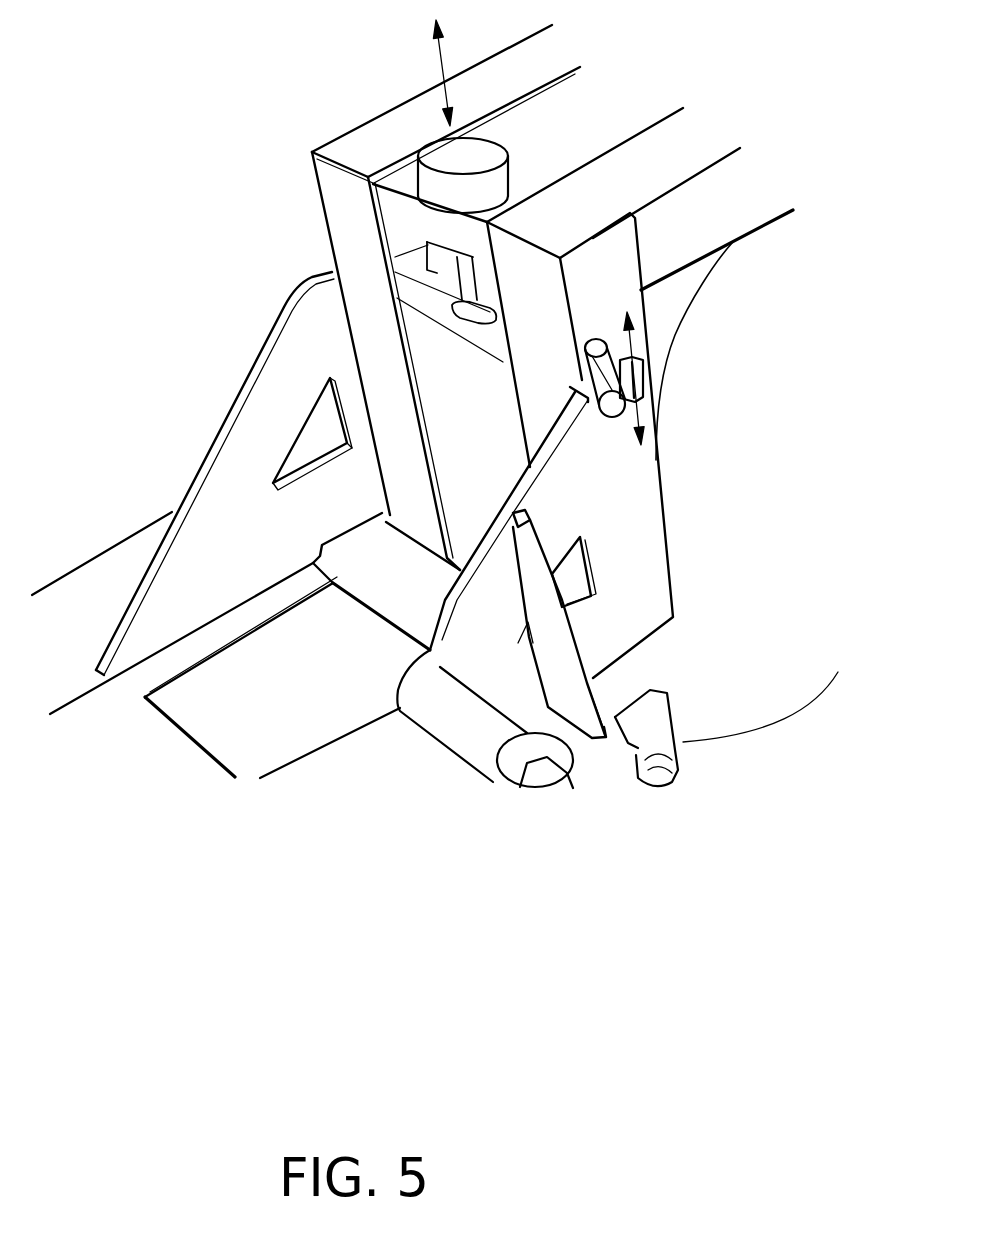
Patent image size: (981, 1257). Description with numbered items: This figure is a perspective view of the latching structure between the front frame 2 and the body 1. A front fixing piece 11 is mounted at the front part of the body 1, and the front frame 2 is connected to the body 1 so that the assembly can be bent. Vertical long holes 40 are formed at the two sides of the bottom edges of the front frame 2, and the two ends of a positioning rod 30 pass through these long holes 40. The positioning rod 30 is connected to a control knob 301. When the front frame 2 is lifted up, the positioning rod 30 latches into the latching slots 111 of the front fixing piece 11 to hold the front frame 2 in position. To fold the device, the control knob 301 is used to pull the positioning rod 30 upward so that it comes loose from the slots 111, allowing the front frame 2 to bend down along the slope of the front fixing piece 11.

The body 1 is at (120, 540).
The front frame 2 is at (337, 133).
The front fixing piece 11 is at (223, 427).
The positioning rod 30 is at (423, 305).
The vertical long hole 40 is at (603, 395).
The latching slot 111 is at (603, 395).
The control knob 301 is at (433, 170).